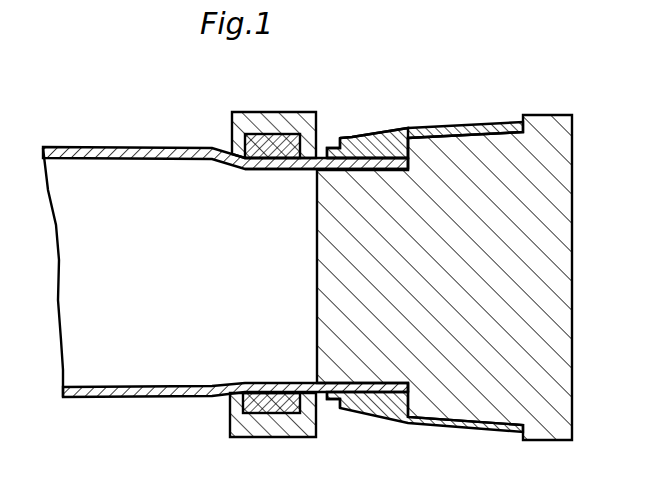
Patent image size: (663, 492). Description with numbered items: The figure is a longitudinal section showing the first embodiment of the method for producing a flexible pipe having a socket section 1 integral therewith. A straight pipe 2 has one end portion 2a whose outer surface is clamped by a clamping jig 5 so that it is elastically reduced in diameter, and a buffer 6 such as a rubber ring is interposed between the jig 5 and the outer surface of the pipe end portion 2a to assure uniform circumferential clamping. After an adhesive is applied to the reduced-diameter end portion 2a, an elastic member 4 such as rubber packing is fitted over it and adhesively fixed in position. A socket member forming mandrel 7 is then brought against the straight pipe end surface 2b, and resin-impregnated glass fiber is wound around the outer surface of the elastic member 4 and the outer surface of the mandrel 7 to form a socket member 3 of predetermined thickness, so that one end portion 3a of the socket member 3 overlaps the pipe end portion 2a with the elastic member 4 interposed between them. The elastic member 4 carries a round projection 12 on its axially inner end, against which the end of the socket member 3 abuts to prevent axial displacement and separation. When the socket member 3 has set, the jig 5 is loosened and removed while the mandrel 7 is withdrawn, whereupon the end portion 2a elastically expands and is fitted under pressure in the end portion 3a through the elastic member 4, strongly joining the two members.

The socket section 1 is at (451, 93).
The straight pipe 2 is at (117, 147).
The one end portion of the straight pipe 2a is at (300, 170).
The straight pipe end surface 2b is at (410, 390).
The socket member 3 is at (488, 128).
The one end portion of the socket member 3a is at (380, 137).
The elastic member 4 is at (373, 415).
The clamping jig 5 is at (269, 112).
The buffer 6 is at (231, 122).
The socket member forming mandrel 7 is at (533, 292).
The round projection 12 is at (350, 138).